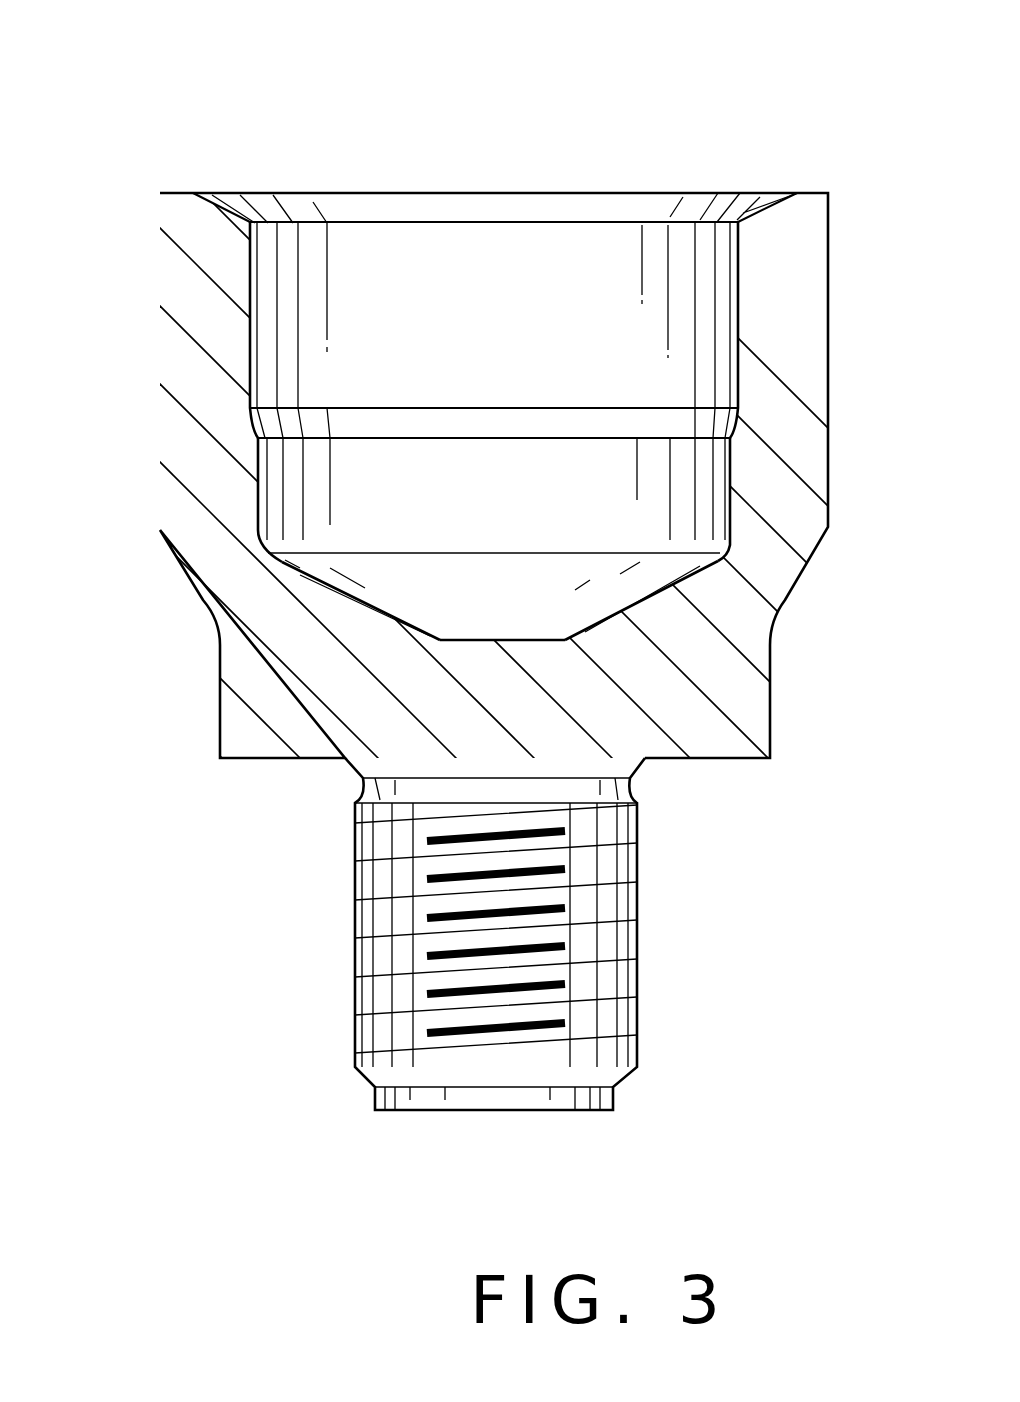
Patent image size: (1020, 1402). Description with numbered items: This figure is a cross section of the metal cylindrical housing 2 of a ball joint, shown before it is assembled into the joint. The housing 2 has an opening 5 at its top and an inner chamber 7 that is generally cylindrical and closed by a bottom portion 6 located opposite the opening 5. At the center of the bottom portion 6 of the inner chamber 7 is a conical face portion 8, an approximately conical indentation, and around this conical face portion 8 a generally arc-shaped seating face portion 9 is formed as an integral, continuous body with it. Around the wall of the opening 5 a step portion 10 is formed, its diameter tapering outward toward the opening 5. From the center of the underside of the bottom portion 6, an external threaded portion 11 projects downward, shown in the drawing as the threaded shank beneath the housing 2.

The housing 2 is at (600, 148).
The opening 5 is at (737, 222).
The bottom portion 6 is at (602, 710).
The inner chamber 7 is at (447, 278).
The conical face portion 8 is at (493, 640).
The seating face portion 9 is at (640, 597).
The step portion 10 is at (263, 428).
The external threaded portion 11 is at (604, 983).